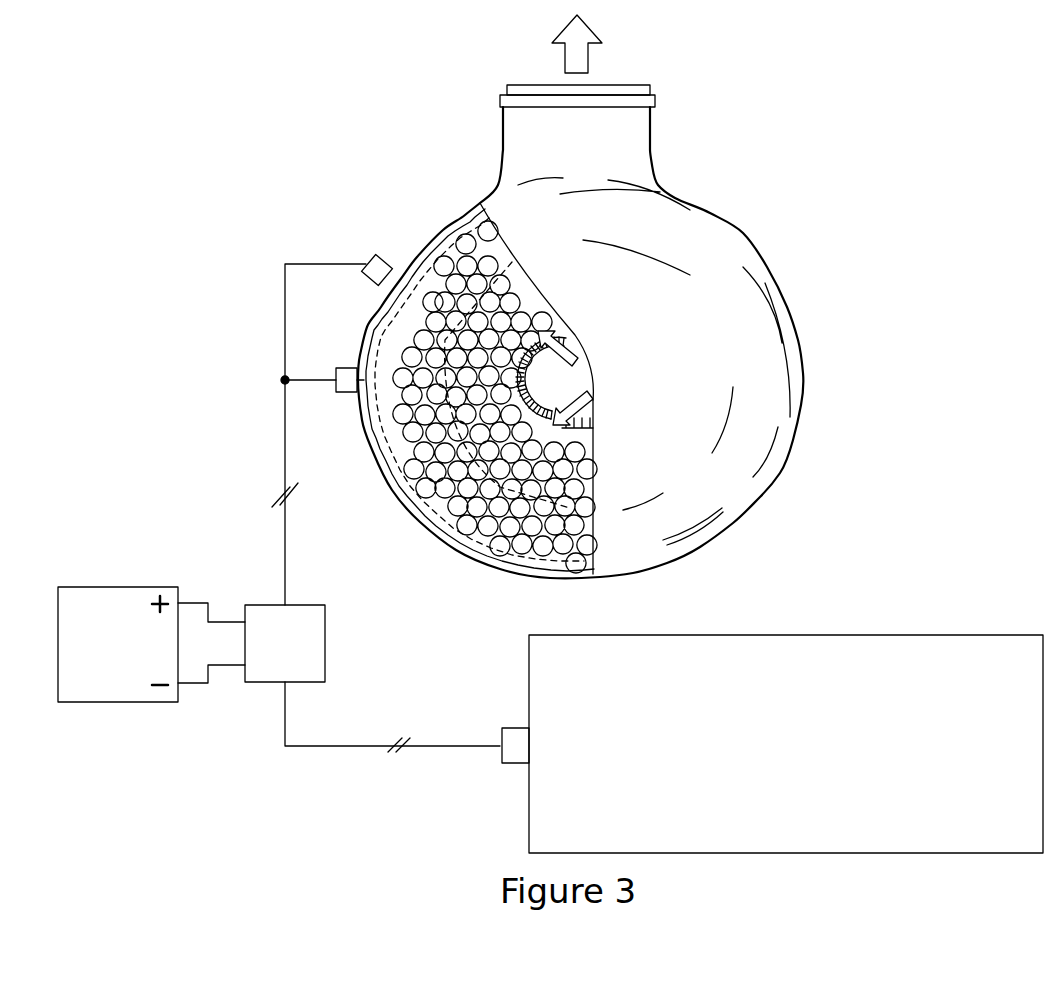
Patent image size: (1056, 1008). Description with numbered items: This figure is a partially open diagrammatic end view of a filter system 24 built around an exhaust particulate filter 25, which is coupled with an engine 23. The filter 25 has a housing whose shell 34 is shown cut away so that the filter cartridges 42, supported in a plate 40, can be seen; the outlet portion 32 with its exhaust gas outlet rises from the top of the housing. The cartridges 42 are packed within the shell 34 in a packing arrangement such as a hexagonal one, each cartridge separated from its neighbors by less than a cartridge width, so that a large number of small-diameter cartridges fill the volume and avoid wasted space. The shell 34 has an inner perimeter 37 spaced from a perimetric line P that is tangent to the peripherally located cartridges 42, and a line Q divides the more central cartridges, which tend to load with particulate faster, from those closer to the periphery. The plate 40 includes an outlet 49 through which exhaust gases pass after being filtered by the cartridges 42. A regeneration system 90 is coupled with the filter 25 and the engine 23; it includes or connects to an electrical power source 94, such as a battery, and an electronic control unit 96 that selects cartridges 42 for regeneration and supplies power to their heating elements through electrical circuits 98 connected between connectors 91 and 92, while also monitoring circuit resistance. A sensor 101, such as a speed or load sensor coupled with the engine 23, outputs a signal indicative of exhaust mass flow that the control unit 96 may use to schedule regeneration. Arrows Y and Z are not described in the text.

The engine 23 is at (708, 634).
The filter system 24 is at (816, 584).
The exhaust particulate filter 25 is at (872, 368).
The outlet portion 32 is at (690, 190).
The shell 34 is at (452, 543).
The inner perimeter 37 is at (472, 213).
The plate 40 is at (596, 560).
The filter cartridges 42 is at (410, 340).
The outlet 49 is at (596, 424).
The regeneration system 90 is at (233, 299).
The connector 91 is at (375, 258).
The connector 92 is at (340, 394).
The electrical power source 94 is at (180, 702).
The electronic control unit 96 is at (326, 645).
The electrical circuits 98 is at (392, 317).
The sensor 101 is at (505, 764).
The perimetric line P is at (398, 468).
The line Q is at (511, 264).
The flow direction arrows Y is at (580, 338).
The outlet flow direction Z is at (590, 58).